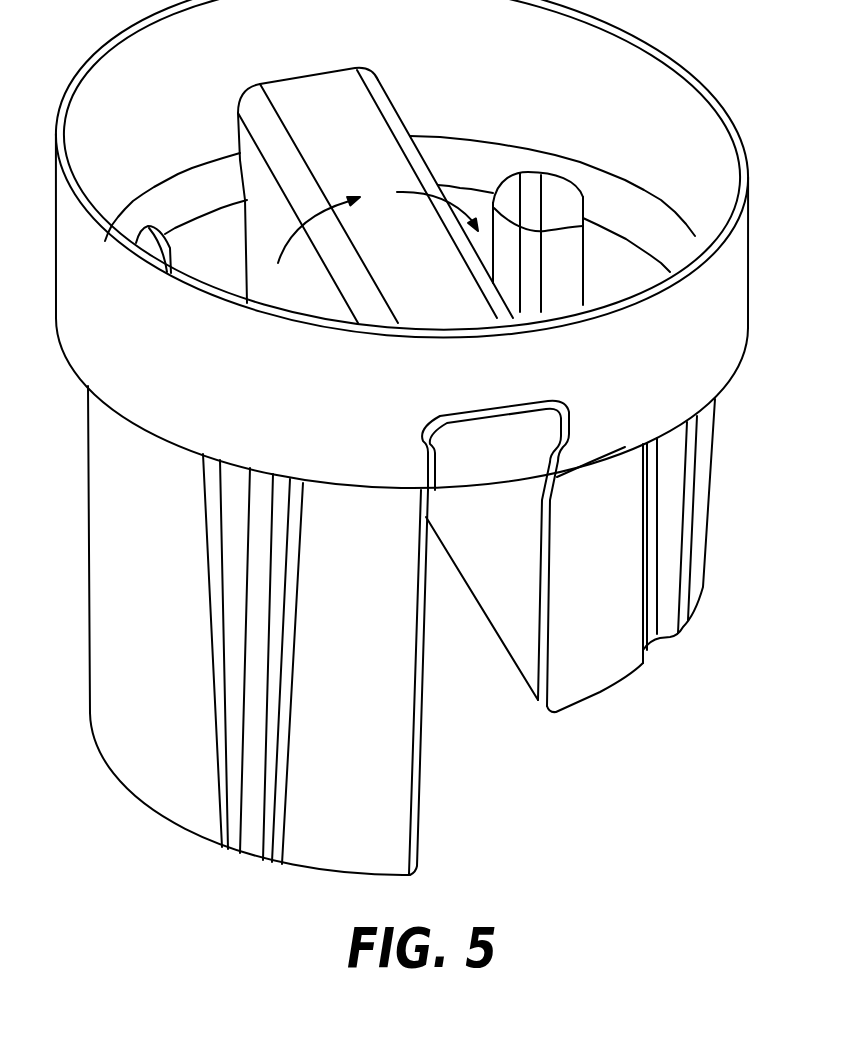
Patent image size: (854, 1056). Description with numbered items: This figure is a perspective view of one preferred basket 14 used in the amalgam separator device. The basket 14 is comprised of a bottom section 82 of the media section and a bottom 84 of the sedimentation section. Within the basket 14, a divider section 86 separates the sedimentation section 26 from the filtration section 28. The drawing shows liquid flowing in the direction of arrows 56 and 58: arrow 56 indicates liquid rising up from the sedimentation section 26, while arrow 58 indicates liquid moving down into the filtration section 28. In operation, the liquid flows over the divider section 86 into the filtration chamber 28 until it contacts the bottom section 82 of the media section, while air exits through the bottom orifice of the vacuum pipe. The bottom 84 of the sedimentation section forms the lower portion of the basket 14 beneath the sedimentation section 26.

The basket 14 is at (487, 779).
The sedimentation section 26 is at (207, 268).
The filtration section 28 is at (609, 262).
The arrow 56 is at (289, 242).
The arrow 58 is at (458, 199).
The bottom section of the media section 82 is at (601, 690).
The bottom of the sedimentation section 84 is at (188, 832).
The divider section 86 is at (367, 142).